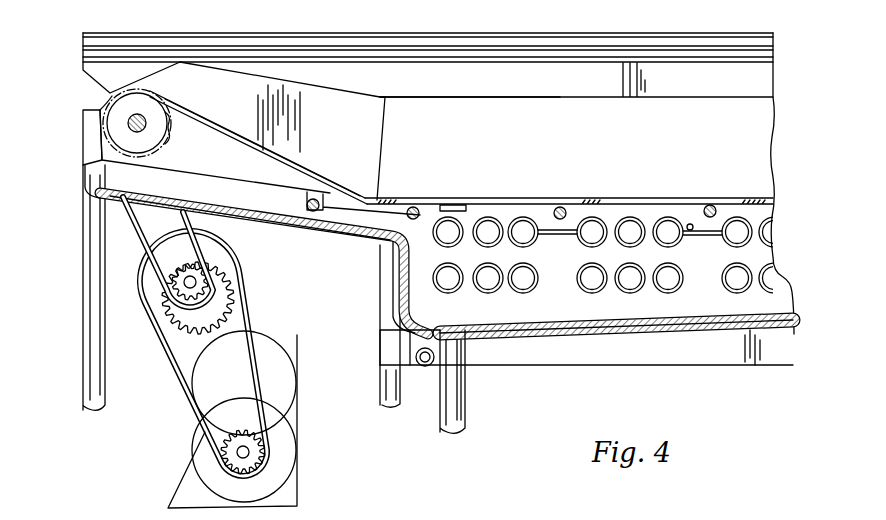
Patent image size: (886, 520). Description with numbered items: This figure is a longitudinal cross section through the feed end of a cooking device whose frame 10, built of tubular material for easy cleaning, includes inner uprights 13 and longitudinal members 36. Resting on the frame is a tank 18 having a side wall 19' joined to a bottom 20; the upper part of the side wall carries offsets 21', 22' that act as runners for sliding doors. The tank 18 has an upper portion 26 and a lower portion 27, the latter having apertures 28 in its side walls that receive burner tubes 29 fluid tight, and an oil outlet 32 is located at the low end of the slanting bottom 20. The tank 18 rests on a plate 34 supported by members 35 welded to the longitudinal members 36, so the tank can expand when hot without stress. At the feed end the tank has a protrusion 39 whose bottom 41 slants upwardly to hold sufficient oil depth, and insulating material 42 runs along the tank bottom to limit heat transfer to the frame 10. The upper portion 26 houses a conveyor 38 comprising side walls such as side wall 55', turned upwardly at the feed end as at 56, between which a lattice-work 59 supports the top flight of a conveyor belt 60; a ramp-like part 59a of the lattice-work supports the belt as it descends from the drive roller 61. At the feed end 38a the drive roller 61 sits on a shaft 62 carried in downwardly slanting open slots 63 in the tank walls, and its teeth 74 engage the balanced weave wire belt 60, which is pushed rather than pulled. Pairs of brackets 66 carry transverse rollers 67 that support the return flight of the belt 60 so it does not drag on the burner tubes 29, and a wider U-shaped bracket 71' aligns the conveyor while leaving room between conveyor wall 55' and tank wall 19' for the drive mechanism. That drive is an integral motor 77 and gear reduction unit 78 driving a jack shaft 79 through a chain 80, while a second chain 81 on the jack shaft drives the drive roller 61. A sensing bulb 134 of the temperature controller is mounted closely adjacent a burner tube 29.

The frame 10 is at (86, 390).
The inner uprights 13 is at (88, 234).
The tank 18 is at (76, 140).
The side wall 19' is at (782, 183).
The bottom 20 is at (578, 317).
The offset 21' is at (428, 65).
The offset 22' is at (428, 24).
The upper portion 26 is at (647, 63).
The lower portion 27 is at (674, 326).
The apertures 28 is at (472, 290).
The burner tubes 29 is at (536, 237).
The oil outlet 32 is at (460, 402).
The plate 34 is at (570, 341).
The supporting members 35 is at (416, 354).
The longitudinal members 36 is at (582, 365).
The conveyor 38 is at (568, 93).
The feed end 38a is at (147, 83).
The protrusion 39 is at (234, 206).
The bottom 41 is at (186, 196).
The insulating material 42 is at (740, 327).
The side wall 55' is at (470, 81).
The upturned end 56 is at (316, 92).
The lattice-work 59 is at (626, 199).
The ramp-like feed end part 59a is at (316, 170).
The conveyor belt 60 is at (189, 110).
The drive roller 61 is at (158, 144).
The shaft 62 is at (152, 119).
The open slots 63 is at (98, 103).
The brackets 66 is at (310, 191).
The transverse roller 67 is at (328, 199).
The U-shaped bracket 71' is at (456, 194).
The teeth 74 is at (156, 128).
The motor 77 is at (276, 352).
The gear reduction unit 78 is at (295, 451).
The jack shaft 79 is at (192, 288).
The chain 80 is at (244, 310).
The chain 81 is at (140, 222).
The sensing bulb 134 is at (690, 231).